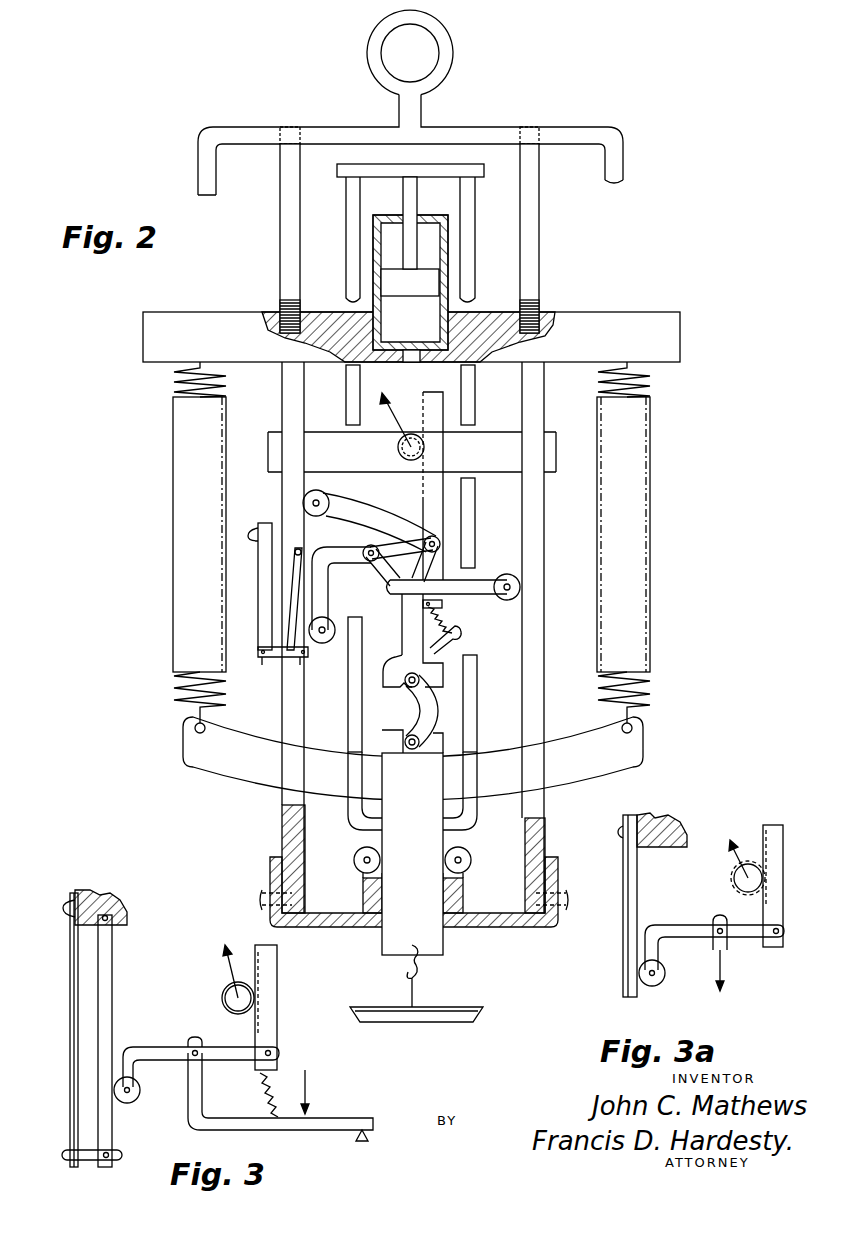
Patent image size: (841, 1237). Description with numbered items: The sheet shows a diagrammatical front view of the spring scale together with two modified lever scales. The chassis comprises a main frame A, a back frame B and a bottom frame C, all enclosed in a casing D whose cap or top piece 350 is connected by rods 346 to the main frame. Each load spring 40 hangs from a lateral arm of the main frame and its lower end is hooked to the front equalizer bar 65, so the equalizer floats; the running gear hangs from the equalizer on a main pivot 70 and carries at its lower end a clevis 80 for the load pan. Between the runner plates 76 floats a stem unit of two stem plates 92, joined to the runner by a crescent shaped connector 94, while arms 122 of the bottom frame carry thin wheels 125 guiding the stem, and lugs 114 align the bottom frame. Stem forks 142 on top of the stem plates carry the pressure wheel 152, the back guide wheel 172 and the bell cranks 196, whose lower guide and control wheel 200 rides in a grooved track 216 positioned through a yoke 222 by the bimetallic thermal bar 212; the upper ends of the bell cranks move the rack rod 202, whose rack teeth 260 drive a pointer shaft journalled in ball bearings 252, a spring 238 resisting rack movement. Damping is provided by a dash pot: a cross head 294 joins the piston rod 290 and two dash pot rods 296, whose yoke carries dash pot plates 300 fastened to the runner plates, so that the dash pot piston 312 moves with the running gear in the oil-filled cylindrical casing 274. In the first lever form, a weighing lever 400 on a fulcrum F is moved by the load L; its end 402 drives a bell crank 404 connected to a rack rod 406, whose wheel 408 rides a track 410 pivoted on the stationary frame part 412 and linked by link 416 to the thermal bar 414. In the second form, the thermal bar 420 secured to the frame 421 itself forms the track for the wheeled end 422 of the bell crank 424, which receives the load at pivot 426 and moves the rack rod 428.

In FIG. 2, the cap or top piece 350 is at (569, 134).
In FIG. 2, the casing D is at (618, 160).
In FIG. 2, the rods 346 is at (530, 248).
In FIG. 2, the main frame A is at (157, 347).
In FIG. 2, the dash pot piston 312 is at (410, 288).
In FIG. 2, the cross head 294 is at (418, 168).
In FIG. 2, the piston rod 290 is at (417, 200).
In FIG. 2, the dash pot rods 296 is at (348, 224).
In FIG. 2, the cylindrical casing 274 is at (376, 295).
In FIG. 2, the back frame B is at (556, 452).
In FIG. 2, the dash pot plates 300 is at (468, 522).
In FIG. 2, the rack rod 202 is at (430, 498).
In FIG. 2, the rack teeth 260 is at (425, 478).
In FIG. 2, the ball bearings 252 is at (398, 447).
In FIG. 2, the pressure wheel 152 is at (328, 500).
In FIG. 2, the stem forks 142 is at (413, 596).
In FIG. 2, the wheel 172 is at (518, 584).
In FIG. 2, the bell cranks 196 is at (320, 580).
In FIG. 2, the guide and control wheel 200 is at (309, 630).
In FIG. 2, the thermal bar 212 is at (265, 586).
In FIG. 2, the grooved track 216 is at (298, 602).
In FIG. 2, the yoke 222 is at (283, 660).
In FIG. 2, the spring 238 is at (450, 625).
In FIG. 2, the stem plates 92 is at (412, 704).
In FIG. 2, the crescent shaped connector 94 is at (423, 711).
In FIG. 2, the load springs 40 is at (190, 552).
In FIG. 2, the front equalizer bar 65 is at (628, 757).
In FIG. 2, the main pivot 70 is at (420, 776).
In FIG. 2, the lugs 114 is at (559, 866).
In FIG. 2, the bottom frame C is at (558, 925).
In FIG. 2, the thin wheels 125 is at (468, 853).
In FIG. 2, the arms 122 is at (463, 903).
In FIG. 2, the runner plates 76 is at (412, 854).
In FIG. 2, the clevis 80 is at (421, 964).
In FIG. 2, the load L is at (463, 1000).
In FIG. 3, the stationary frame part 412 is at (100, 897).
In FIG. 3, the thermal bar 414 is at (70, 978).
In FIG. 3, the track 410 is at (107, 957).
In FIG. 3, the link 416 is at (87, 1157).
In FIG. 3, the rack rod 406 is at (263, 987).
In FIG. 3, the bell crank 404 is at (157, 1060).
In FIG. 3, the wheel 408 is at (123, 1103).
In FIG. 3, the end of the lever 402 is at (200, 1038).
In FIG. 3, the weighing lever 400 is at (240, 1098).
In FIG. 3, the fulcrum F is at (376, 1147).
In FIG. 3A, the thermal bar 420 is at (633, 887).
In FIG. 3A, the frame 421 is at (660, 826).
In FIG. 3A, the rack rod 428 is at (778, 927).
In FIG. 3A, the bell crank 424 is at (692, 914).
In FIG. 3A, the wheeled end 422 is at (660, 982).
In FIG. 3A, the pivot 426 is at (733, 918).